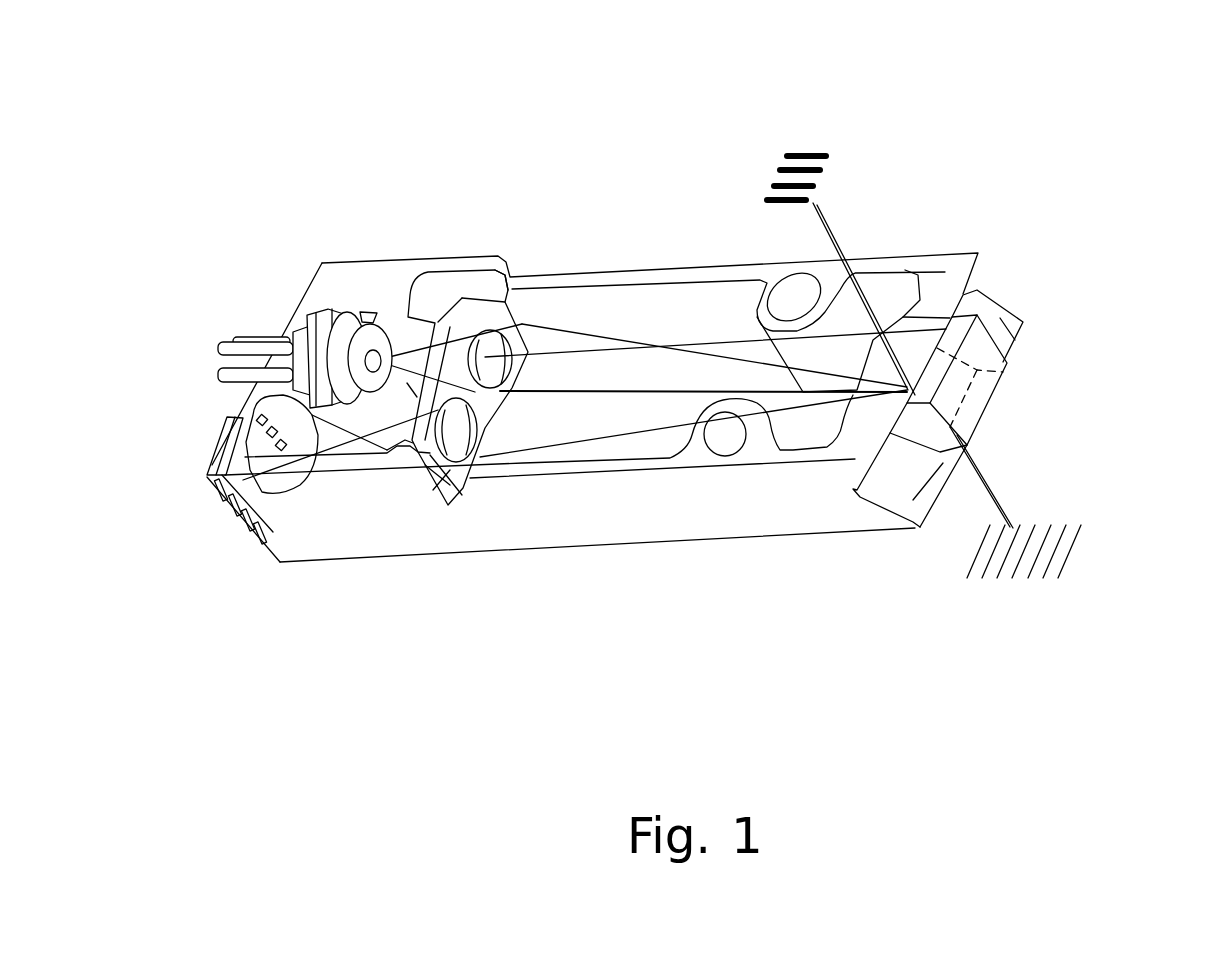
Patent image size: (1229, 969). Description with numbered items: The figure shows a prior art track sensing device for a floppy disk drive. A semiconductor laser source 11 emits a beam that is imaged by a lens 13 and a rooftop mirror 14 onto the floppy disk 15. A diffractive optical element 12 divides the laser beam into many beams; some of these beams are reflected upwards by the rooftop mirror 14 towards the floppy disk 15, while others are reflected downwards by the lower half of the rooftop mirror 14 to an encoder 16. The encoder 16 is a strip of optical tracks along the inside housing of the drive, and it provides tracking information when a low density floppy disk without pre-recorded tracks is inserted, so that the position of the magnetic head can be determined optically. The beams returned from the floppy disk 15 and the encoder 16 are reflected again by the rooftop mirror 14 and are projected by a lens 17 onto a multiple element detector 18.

The semiconductor laser source 11 is at (326, 297).
The diffractive optical element 12 is at (465, 297).
The lens 13 is at (508, 278).
The rooftop mirror 14 is at (998, 327).
The floppy disk 15 is at (792, 137).
The encoder 16 is at (1083, 560).
The lens 17 is at (448, 480).
The multiple element detector 18 is at (272, 503).